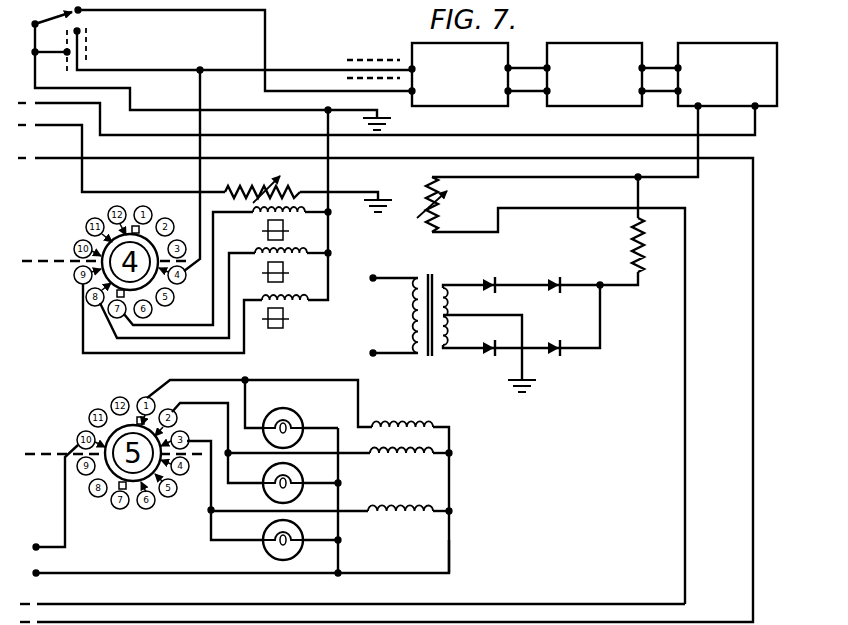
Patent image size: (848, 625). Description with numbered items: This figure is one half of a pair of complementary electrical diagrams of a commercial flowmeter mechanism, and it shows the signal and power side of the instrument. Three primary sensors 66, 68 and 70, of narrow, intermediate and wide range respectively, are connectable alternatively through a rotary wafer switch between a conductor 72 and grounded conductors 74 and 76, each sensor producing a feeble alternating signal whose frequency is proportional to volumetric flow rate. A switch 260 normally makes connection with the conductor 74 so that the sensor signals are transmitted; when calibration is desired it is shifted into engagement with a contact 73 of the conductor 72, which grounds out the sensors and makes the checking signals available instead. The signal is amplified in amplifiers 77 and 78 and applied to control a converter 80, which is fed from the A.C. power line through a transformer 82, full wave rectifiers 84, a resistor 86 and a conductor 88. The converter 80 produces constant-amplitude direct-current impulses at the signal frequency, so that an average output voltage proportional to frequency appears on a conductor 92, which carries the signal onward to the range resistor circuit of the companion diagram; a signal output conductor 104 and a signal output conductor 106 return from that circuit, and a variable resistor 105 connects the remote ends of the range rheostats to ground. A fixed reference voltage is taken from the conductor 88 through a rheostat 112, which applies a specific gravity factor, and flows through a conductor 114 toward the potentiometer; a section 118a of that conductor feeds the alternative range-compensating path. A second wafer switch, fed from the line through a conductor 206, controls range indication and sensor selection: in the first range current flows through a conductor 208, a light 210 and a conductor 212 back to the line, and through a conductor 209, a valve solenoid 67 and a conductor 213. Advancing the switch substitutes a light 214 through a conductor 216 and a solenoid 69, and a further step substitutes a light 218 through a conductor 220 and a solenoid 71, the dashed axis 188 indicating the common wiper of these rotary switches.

The switch 260 is at (58, 15).
The conductor 76 is at (38, 40).
The contact 73 is at (81, 31).
The conductor 74 is at (164, 15).
The conductor 72 is at (328, 65).
The amplifier 77 is at (414, 46).
The amplifier 78 is at (596, 46).
The converter 80 is at (729, 46).
The conductor 92 is at (103, 114).
The signal output conductor 104 is at (50, 126).
The signal output conductor 106 is at (38, 161).
The variable resistor 105 is at (252, 186).
The rheostat 112 is at (448, 198).
The conductor 88 is at (548, 177).
The conductor 114 is at (548, 208).
The section of conductor 118a is at (120, 604).
The resistor 86 is at (634, 247).
The transformer 82 is at (430, 271).
The full wave rectifiers 84 is at (552, 280).
The rotary switch wiper axis 188 is at (50, 257).
The primary sensor 66 is at (260, 219).
The primary sensor 68 is at (262, 263).
The primary sensor 70 is at (292, 308).
The conductor 206 is at (66, 523).
The conductor 209 is at (305, 380).
The conductor 208 is at (246, 388).
The light 210 is at (295, 417).
The conductor 212 is at (340, 432).
The conductor 216 is at (254, 487).
The light 214 is at (296, 476).
The conductor 220 is at (211, 532).
The light 218 is at (268, 549).
The valve solenoid 67 is at (420, 422).
The valve solenoid 69 is at (413, 456).
The valve solenoid 71 is at (403, 514).
The conductor 213 is at (450, 549).